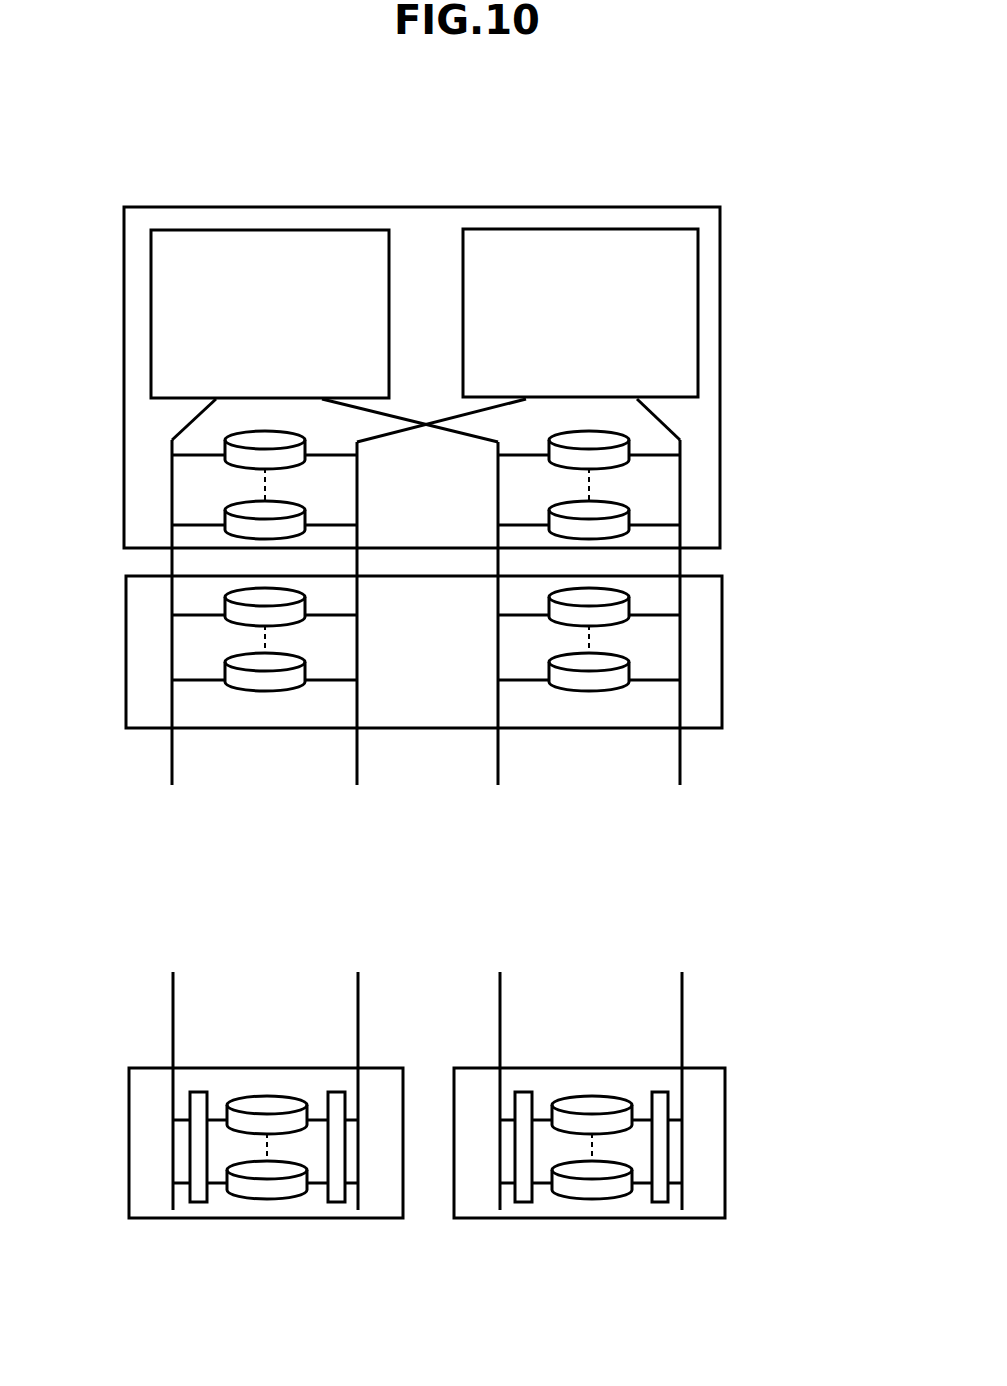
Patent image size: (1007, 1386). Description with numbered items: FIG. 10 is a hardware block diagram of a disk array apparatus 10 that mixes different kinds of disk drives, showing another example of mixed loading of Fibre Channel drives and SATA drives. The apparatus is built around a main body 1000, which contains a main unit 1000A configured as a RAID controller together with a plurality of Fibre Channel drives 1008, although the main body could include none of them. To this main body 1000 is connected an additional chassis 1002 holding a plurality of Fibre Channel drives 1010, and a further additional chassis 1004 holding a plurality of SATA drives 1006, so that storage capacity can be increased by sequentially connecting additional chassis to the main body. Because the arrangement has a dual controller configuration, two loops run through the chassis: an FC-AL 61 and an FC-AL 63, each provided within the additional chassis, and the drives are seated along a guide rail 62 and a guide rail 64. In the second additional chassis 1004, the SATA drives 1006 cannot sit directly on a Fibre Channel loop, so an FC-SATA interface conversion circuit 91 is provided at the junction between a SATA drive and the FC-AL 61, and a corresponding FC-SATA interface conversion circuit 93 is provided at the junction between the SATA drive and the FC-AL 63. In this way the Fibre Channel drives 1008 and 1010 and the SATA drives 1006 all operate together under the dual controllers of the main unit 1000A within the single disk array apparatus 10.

The disk array apparatus 10 is at (632, 162).
The main body 1000 is at (720, 378).
The main unit 1000A is at (698, 297).
The Fibre Channel drives 1008 is at (622, 505).
The additional chassis 1002 is at (722, 594).
The Fibre Channel drives 1010 is at (622, 660).
The FC-AL 61 is at (168, 562).
The guide rail 62 is at (498, 762).
The FC-AL 63 is at (357, 762).
The guide rail 64 is at (680, 762).
The additional chassis 1004 is at (725, 1128).
The SATA drives 1006 is at (267, 1100).
The FC-SATA interface conversion circuit 91 is at (198, 1202).
The FC-SATA interface conversion circuit 93 is at (342, 1202).